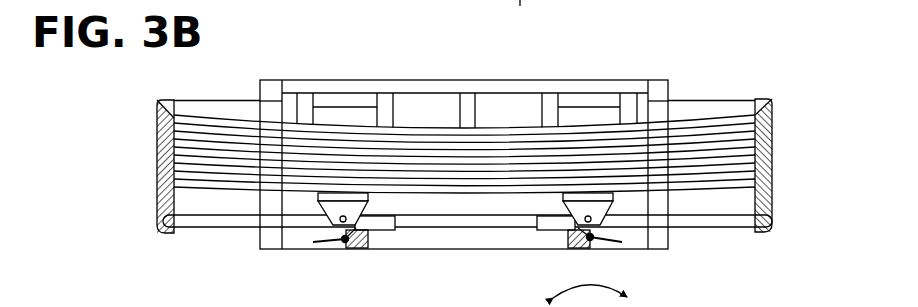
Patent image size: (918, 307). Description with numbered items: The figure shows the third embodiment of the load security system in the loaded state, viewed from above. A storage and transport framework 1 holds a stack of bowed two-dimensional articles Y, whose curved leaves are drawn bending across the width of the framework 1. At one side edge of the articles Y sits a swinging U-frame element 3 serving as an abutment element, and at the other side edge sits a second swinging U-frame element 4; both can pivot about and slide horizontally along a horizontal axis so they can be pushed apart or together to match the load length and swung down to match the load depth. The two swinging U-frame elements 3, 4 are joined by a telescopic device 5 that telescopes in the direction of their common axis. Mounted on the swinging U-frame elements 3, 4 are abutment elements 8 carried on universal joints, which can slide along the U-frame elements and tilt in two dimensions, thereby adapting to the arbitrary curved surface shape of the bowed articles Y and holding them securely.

The storage and transport framework 1 is at (453, 80).
The bowed two-dimensional articles Y is at (717, 147).
The swinging U-frame element 3 is at (772, 155).
The swinging U-frame element 4 is at (157, 164).
The telescopic device 5 is at (468, 229).
The abutment element 8 is at (329, 222).